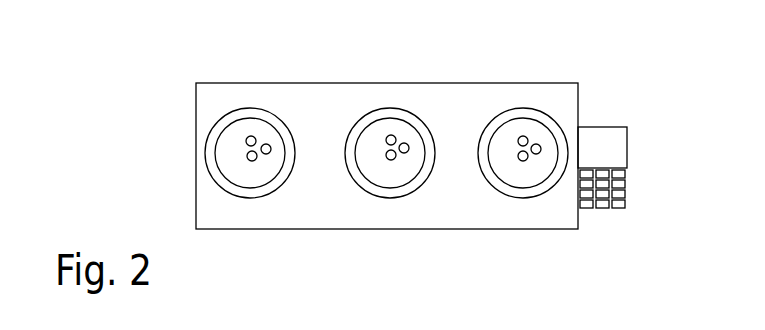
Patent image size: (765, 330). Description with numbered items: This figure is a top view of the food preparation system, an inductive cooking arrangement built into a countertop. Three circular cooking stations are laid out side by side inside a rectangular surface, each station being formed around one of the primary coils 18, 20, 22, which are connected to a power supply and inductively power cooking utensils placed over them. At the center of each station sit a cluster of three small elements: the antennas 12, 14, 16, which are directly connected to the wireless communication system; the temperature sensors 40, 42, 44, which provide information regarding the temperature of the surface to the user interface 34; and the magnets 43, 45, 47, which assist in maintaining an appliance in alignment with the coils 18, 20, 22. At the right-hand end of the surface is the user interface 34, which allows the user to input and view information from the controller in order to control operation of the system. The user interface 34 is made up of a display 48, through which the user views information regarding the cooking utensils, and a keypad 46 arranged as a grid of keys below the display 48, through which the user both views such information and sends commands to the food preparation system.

The antenna 12 is at (250, 136).
The antenna 14 is at (387, 137).
The antenna 16 is at (518, 139).
The primary coil 18 is at (263, 188).
The primary coil 20 is at (390, 198).
The primary coil 22 is at (521, 198).
The user interface 34 is at (635, 161).
The temperature sensor 40 is at (246, 157).
The temperature sensor 42 is at (387, 159).
The magnet 43 is at (267, 144).
The temperature sensor 44 is at (519, 159).
The magnet 45 is at (405, 143).
The keypad 46 is at (627, 192).
The magnet 47 is at (538, 144).
The display 48 is at (627, 140).